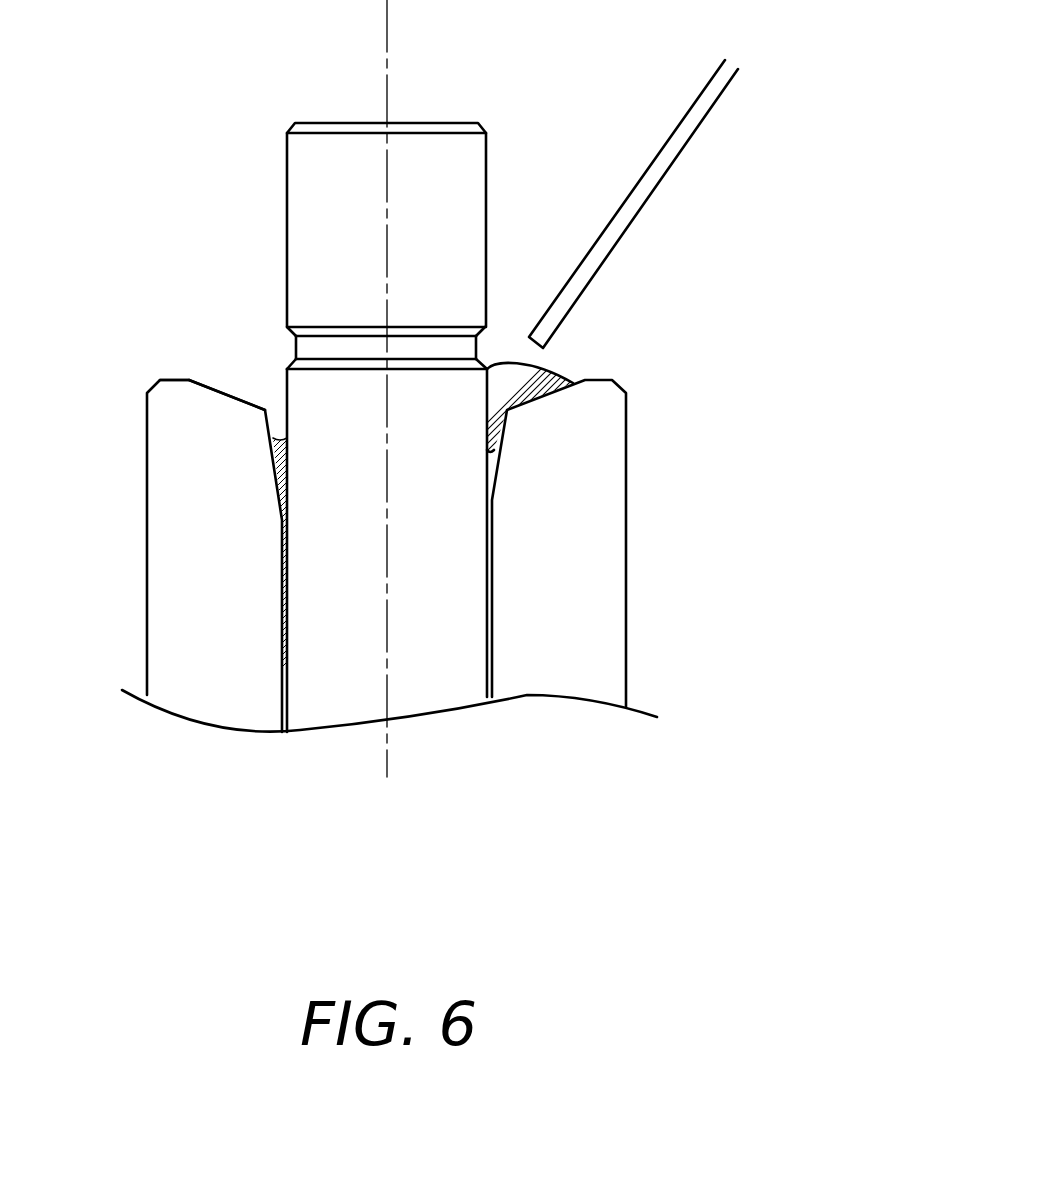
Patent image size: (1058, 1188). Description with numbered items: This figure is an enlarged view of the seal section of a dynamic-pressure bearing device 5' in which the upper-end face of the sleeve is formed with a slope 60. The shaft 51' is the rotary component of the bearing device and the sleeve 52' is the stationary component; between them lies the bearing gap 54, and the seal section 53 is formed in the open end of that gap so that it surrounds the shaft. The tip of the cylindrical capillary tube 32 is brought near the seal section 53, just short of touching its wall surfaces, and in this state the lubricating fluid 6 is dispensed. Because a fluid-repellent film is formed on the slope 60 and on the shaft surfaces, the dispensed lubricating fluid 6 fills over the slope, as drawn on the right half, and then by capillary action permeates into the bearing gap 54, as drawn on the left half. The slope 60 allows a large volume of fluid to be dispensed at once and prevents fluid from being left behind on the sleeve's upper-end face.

The dynamic-pressure bearing device 5' is at (278, 376).
The shaft 51' is at (447, 163).
The sleeve 52' is at (497, 556).
The seal section 53 is at (280, 422).
The bearing gap 54 is at (283, 540).
The slope 60 is at (225, 382).
The lubricating fluid 6 is at (512, 392).
The cylindrical capillary tube 32 is at (648, 184).